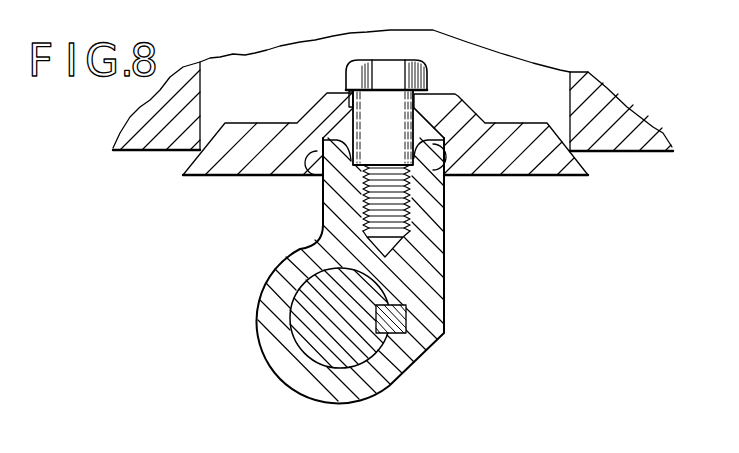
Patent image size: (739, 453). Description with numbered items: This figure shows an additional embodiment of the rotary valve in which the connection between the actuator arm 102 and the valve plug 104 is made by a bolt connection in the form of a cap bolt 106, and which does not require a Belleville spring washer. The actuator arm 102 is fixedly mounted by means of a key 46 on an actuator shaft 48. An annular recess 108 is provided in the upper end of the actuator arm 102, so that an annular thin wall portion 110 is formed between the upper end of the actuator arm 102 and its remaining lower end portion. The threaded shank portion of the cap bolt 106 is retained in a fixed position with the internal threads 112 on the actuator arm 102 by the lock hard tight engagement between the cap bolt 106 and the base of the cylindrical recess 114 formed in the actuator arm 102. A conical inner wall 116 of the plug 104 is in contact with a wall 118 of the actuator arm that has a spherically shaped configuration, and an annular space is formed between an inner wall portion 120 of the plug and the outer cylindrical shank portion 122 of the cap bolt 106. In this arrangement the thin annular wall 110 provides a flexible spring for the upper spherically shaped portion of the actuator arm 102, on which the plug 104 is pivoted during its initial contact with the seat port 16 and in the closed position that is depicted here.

The seat port 16 is at (630, 143).
The key 46 is at (397, 318).
The actuator shaft 48 is at (340, 360).
The actuator arm 102 is at (433, 264).
The valve plug 104 is at (565, 176).
The cap bolt 106 is at (416, 70).
The annular recess 108 is at (458, 176).
The annular thin wall portion 110 is at (335, 148).
The internal threads 112 is at (407, 205).
The cylindrical recess 114 is at (327, 200).
The conical inner wall 116 is at (438, 123).
The spherically shaped wall 118 is at (423, 157).
The inner wall portion 120 is at (348, 98).
The outer cylindrical shank portion 122 is at (367, 88).